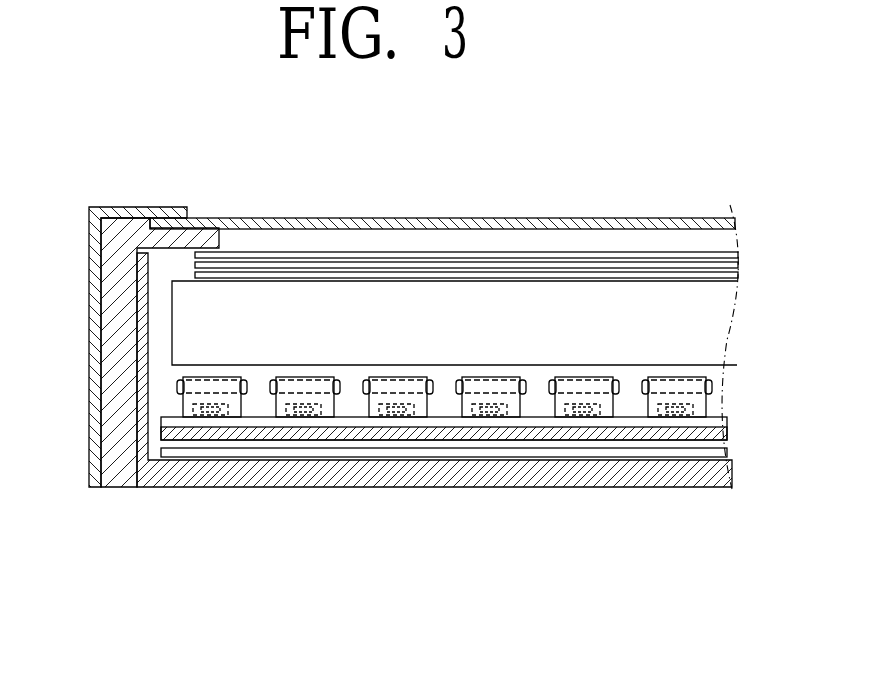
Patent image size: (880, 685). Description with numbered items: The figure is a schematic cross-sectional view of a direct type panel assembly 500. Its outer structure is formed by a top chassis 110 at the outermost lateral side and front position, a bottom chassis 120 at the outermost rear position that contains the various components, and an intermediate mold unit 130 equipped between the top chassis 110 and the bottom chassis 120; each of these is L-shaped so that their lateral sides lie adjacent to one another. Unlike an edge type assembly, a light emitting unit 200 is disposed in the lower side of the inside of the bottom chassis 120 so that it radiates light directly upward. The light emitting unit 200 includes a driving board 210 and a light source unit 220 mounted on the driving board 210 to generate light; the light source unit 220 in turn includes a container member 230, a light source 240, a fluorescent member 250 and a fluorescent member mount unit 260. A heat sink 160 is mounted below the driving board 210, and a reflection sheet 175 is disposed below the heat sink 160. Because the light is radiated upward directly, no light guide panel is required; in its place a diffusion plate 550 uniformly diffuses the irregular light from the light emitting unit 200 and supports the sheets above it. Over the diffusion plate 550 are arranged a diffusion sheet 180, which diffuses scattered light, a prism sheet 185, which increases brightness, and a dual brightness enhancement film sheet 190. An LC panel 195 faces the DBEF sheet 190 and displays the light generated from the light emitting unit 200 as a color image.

The direct type panel assembly 500 is at (108, 160).
The top chassis 110 is at (105, 211).
The bottom chassis 120 is at (157, 475).
The intermediate mold unit 130 is at (117, 388).
The heat sink 160 is at (723, 433).
The reflection sheet 175 is at (725, 453).
The diffusion sheet 180 is at (535, 273).
The prism sheet 185 is at (458, 263).
The dual brightness enhancement film sheet 190 is at (397, 253).
The LC panel 195 is at (323, 222).
The diffusion plate 550 is at (603, 292).
The light emitting unit 200 is at (360, 580).
The driving board 210 is at (242, 422).
The light source unit 220 is at (318, 538).
The container member 230 is at (420, 410).
The light source 240 is at (390, 408).
The fluorescent member 250 is at (336, 386).
The fluorescent member mount unit 260 is at (459, 385).